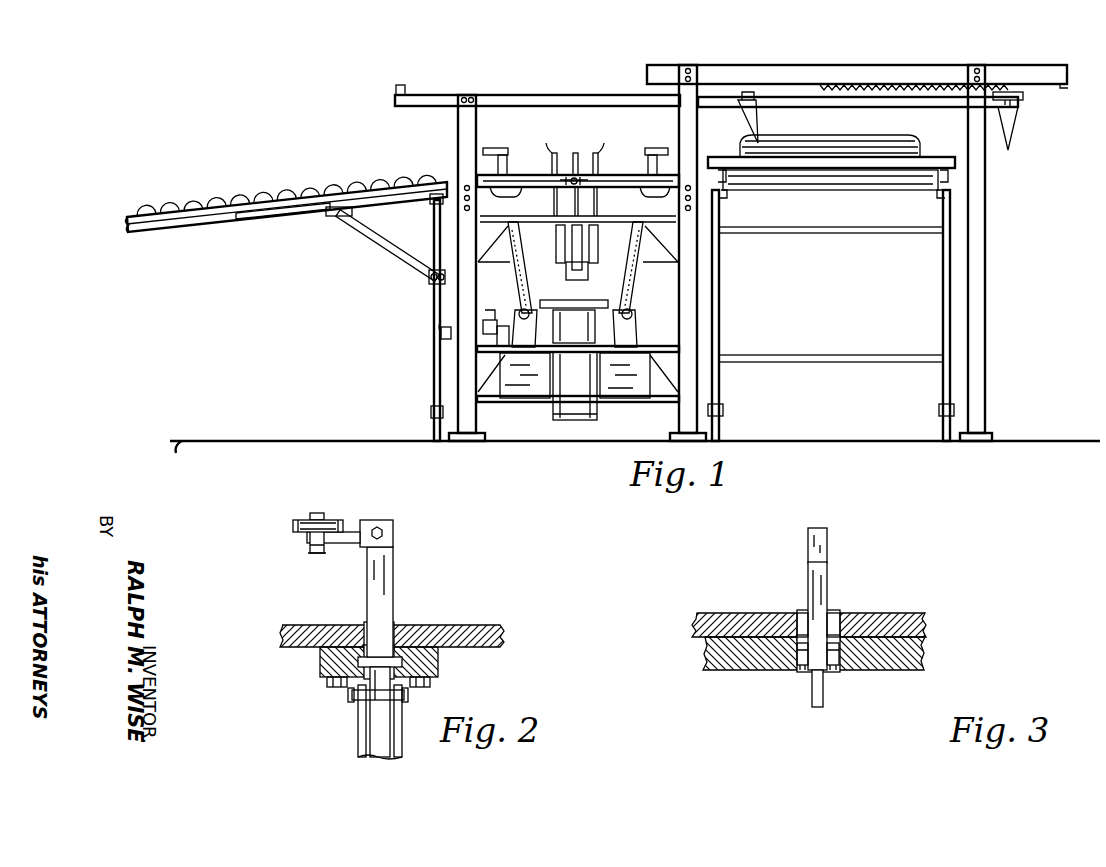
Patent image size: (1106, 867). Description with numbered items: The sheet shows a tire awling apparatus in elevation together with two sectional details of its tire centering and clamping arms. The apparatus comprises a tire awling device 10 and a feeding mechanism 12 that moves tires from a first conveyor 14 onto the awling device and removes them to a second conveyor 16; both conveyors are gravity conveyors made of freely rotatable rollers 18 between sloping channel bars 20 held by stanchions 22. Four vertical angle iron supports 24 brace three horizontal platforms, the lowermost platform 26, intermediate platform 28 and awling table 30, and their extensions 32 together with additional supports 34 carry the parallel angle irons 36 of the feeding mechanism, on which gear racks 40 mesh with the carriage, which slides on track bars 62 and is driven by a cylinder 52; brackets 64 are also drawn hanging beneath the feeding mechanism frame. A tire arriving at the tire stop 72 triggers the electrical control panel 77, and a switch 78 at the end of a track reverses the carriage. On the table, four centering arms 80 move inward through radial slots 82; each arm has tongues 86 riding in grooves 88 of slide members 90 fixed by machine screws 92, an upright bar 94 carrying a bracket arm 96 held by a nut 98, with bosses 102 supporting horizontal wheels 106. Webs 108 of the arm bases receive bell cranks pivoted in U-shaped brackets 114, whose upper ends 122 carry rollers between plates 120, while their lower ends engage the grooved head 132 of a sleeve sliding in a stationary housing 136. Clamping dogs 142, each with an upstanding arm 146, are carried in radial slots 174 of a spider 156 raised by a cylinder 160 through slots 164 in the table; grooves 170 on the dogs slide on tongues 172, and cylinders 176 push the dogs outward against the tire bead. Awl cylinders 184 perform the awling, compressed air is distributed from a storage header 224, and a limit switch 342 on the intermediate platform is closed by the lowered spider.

In FIG. 1, the tire awling device 10 is at (500, 302).
In FIG. 1, the feeding mechanism 12 is at (834, 65).
In FIG. 1, the first conveyor 14 is at (968, 164).
In FIG. 1, the second conveyor 16 is at (522, 199).
In FIG. 1, the rollers 18 is at (305, 187).
In FIG. 1, the channel bars 20 is at (258, 221).
In FIG. 1, the stanchions 22 is at (434, 372).
In FIG. 1, the vertical angle iron supports 24 is at (481, 417).
In FIG. 1, the lowermost platform 26 is at (660, 326).
In FIG. 1, the intermediate platform 28 is at (516, 232).
In FIG. 1, the awling table 30 is at (524, 175).
In FIG. 2, the awling table 30 is at (286, 628).
In FIG. 3, the awling table 30 is at (721, 614).
In FIG. 1, the extensions 32 is at (457, 131).
In FIG. 1, the additional angle iron supports 34 is at (986, 335).
In FIG. 1, the angle irons 36 is at (774, 64).
In FIG. 1, the gear racks 40 is at (867, 100).
In FIG. 1, the cylinder 52 is at (1040, 85).
In FIG. 1, the bars 62 is at (546, 98).
In FIG. 1, the brackets 64 is at (732, 126).
In FIG. 1, the tire stop 72 is at (935, 156).
In FIG. 1, the electrical control panel 77 is at (430, 285).
In FIG. 1, the switch 78 is at (403, 85).
In FIG. 1, the centering arms 80 is at (507, 144).
In FIG. 2, the centering arms 80 is at (360, 585).
In FIG. 2, the slots 82 is at (358, 625).
In FIG. 2, the tongues 86 is at (442, 625).
In FIG. 2, the grooves 88 is at (413, 661).
In FIG. 2, the slide members 90 is at (320, 664).
In FIG. 2, the machine screws 92 is at (334, 689).
In FIG. 2, the upright bar 94 is at (391, 586).
In FIG. 2, the bracket arm 96 is at (348, 550).
In FIG. 2, the nut 98 is at (383, 532).
In FIG. 2, the bosses 102 is at (306, 546).
In FIG. 1, the wheels 106 is at (483, 154).
In FIG. 2, the wheels 106 is at (288, 527).
In FIG. 2, the webs 108 is at (402, 700).
In FIG. 1, the U-shaped brackets 114 is at (516, 349).
In FIG. 2, the plates 120 is at (357, 718).
In FIG. 1, the upper ends of bell cranks 122 is at (522, 265).
In FIG. 2, the upper ends of bell cranks 122 is at (370, 742).
In FIG. 1, the head 132 is at (565, 269).
In FIG. 1, the stationary housing 136 is at (556, 416).
In FIG. 1, the clamping dogs 142 is at (602, 145).
In FIG. 3, the clamping dogs 142 is at (822, 527).
In FIG. 3, the upstanding arm 146 is at (831, 580).
In FIG. 1, the spider 156 is at (612, 180).
In FIG. 3, the spider 156 is at (698, 658).
In FIG. 1, the pressure fluid actuated cylinder 160 is at (573, 294).
In FIG. 3, the radial slots 164 is at (798, 612).
In FIG. 3, the grooves 170 is at (793, 673).
In FIG. 3, the tongues 172 is at (800, 670).
In FIG. 3, the radially disposed slots 174 is at (841, 628).
In FIG. 1, the pressure fluid actuated cylinders 176 is at (490, 190).
In FIG. 1, the pressure fluid actuating cylinder 184 is at (472, 260).
In FIG. 1, the storage header 224 is at (442, 335).
In FIG. 1, the limit switch 342 is at (593, 252).